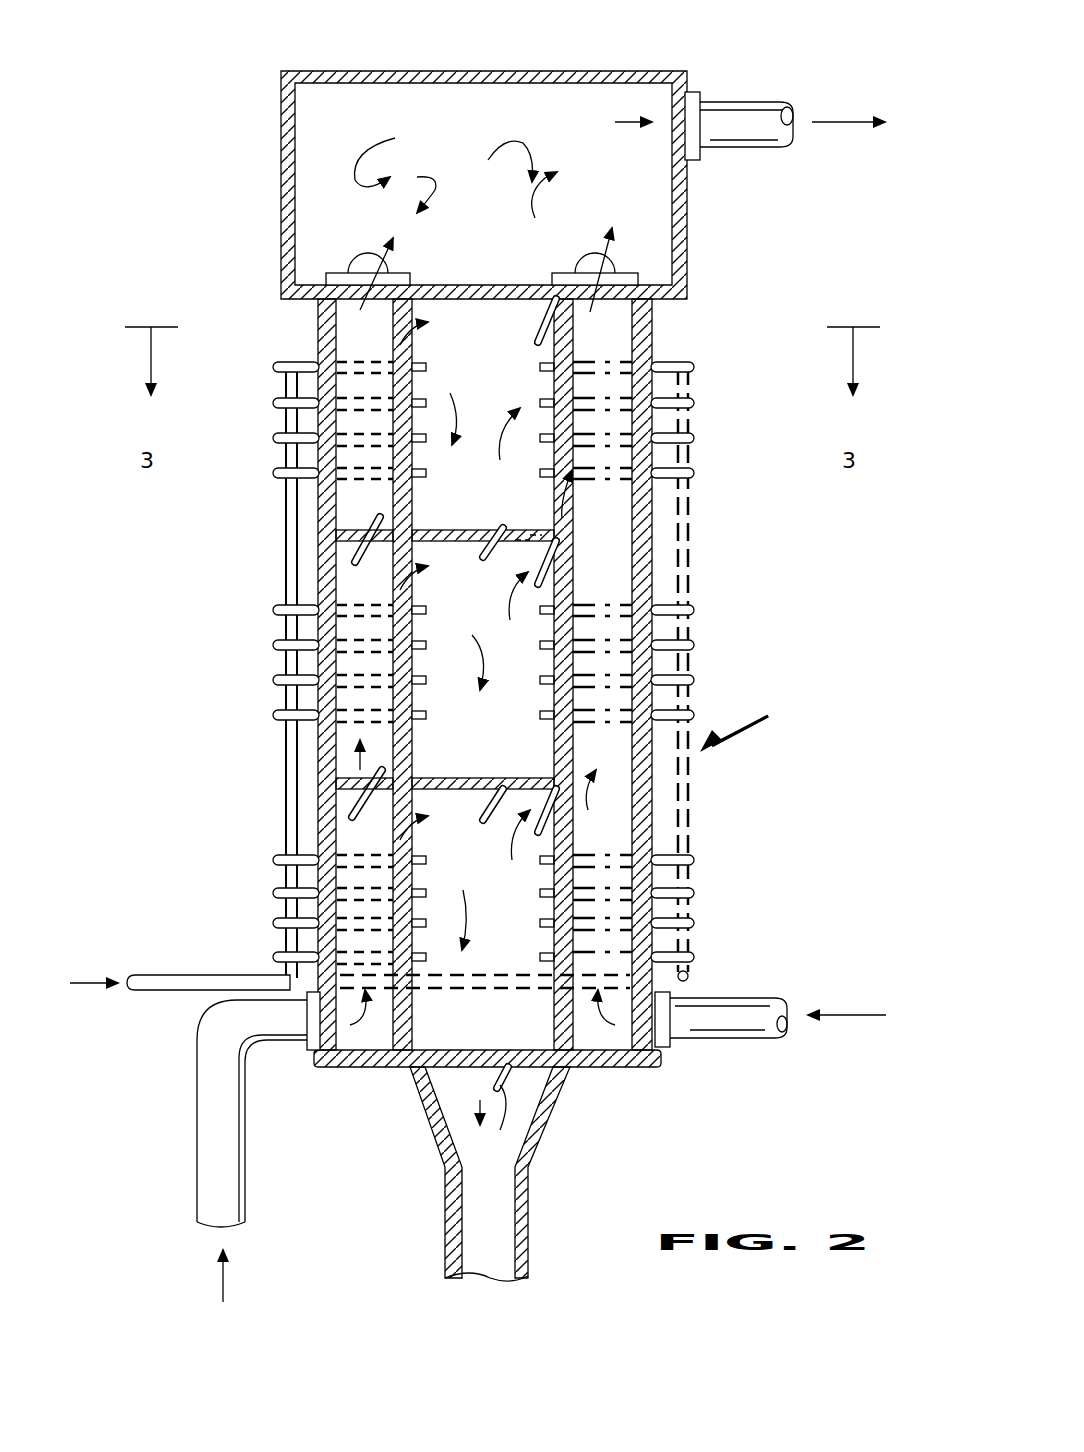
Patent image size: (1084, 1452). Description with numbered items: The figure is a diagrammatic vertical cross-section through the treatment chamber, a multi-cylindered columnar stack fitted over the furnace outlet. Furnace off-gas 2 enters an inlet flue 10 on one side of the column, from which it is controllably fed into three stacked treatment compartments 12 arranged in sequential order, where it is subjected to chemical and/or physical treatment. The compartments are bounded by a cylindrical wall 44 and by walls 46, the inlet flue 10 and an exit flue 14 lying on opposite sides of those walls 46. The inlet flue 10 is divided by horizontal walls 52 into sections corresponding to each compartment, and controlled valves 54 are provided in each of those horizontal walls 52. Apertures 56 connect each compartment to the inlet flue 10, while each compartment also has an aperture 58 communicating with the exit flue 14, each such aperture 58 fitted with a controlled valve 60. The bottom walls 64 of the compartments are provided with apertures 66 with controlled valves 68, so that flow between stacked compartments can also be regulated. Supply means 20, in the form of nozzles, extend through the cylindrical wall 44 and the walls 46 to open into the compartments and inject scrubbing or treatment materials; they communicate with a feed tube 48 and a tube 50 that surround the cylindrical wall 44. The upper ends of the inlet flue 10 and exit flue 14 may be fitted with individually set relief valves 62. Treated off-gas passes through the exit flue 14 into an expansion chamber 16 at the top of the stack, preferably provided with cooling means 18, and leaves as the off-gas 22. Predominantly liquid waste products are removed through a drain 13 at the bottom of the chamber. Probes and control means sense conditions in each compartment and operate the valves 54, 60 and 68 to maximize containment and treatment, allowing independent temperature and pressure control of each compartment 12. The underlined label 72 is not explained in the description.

The off-gas 2 is at (235, 1165).
The inlet flue 10 is at (330, 745).
The treatment compartments 12 is at (505, 410).
The drain 13 is at (528, 1195).
The exit flue 14 is at (646, 522).
The expansion chamber 16 is at (504, 172).
The cooling means 18 is at (422, 115).
The supply means 20 is at (273, 403).
The off-gas leaving the expansion chamber 22 is at (760, 118).
The cylindrical wall 44 is at (655, 458).
The walls 46 is at (428, 768).
The feed tube 48 is at (142, 975).
The tube 50 is at (685, 975).
The horizontal walls 52 is at (360, 537).
The controlled valves 54 is at (345, 545).
The apertures 56 is at (418, 320).
The aperture 58 is at (574, 314).
The controlled valve 60 is at (533, 338).
The relief valves 62 is at (345, 280).
The bottom walls 64 is at (525, 525).
The apertures 66 is at (483, 1063).
The controlled valves 68 is at (500, 552).
The chamber 72 is at (520, 685).